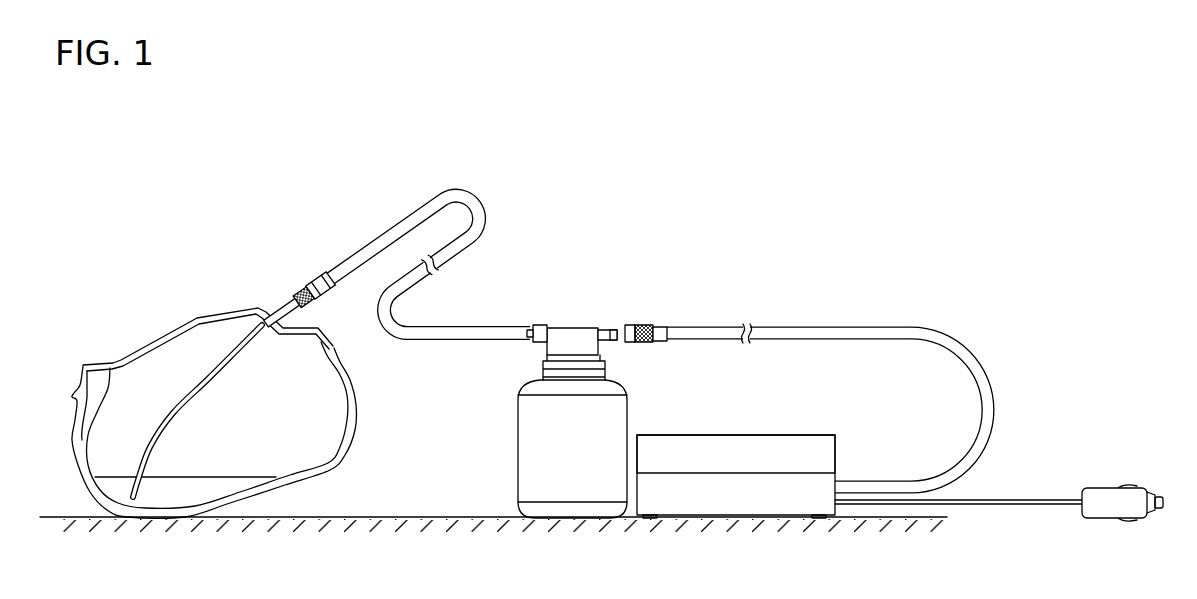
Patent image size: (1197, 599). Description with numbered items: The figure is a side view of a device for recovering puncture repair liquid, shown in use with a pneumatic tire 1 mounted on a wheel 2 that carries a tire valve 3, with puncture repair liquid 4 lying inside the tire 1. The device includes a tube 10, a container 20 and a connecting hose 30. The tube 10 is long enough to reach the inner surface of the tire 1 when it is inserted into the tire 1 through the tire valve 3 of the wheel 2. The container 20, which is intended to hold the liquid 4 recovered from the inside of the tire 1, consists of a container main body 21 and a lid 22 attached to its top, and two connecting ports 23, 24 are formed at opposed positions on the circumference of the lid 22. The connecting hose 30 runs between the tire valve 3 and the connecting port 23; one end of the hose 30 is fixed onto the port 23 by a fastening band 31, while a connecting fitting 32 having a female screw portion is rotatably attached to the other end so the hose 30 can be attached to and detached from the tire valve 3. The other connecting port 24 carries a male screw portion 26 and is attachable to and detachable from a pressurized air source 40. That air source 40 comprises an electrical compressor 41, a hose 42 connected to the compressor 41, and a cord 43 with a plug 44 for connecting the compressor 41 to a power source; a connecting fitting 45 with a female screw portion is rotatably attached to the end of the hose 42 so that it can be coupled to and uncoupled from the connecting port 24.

The pneumatic tire 1 is at (342, 460).
The wheel 2 is at (216, 310).
The tire valve 3 is at (278, 302).
The puncture repair liquid 4 is at (228, 448).
The tube 10 is at (237, 347).
The container 20 is at (552, 367).
The container main body 21 is at (532, 423).
The lid 22 is at (573, 343).
The connecting port 23 is at (527, 324).
The connecting port 24 is at (604, 328).
The male screw portion 26 is at (615, 342).
The connecting hose 30 is at (415, 215).
The fastening band 31 is at (540, 322).
The connecting fitting 32 is at (297, 290).
The pressurized air source 40 is at (736, 446).
The electrical compressor 41 is at (720, 453).
The hose 42 is at (876, 326).
The cord 43 is at (1048, 500).
The plug 44 is at (1103, 497).
The connecting fitting 45 is at (645, 323).